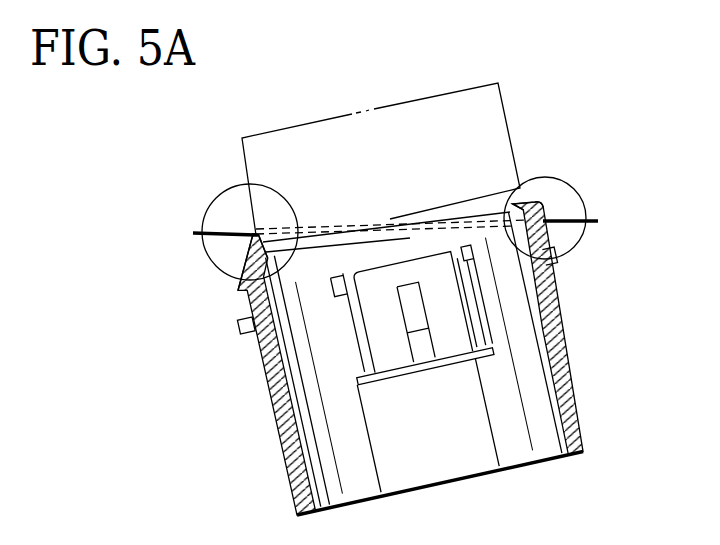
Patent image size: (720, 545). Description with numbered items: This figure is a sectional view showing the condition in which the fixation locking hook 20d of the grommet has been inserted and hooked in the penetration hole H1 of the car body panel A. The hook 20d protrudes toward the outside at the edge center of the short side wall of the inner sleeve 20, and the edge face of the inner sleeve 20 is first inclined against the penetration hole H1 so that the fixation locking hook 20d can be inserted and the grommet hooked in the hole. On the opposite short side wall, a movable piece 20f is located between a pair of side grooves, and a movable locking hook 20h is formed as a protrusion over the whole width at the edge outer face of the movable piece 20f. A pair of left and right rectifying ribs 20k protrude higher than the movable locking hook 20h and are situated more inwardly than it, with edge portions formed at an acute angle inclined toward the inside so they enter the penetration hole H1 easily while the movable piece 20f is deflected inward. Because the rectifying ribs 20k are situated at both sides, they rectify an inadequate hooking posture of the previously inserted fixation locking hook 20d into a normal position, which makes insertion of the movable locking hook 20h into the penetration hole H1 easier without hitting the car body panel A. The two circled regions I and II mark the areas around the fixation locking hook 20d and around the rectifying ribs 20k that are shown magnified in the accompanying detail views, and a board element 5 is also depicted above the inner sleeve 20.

The board 5 is at (510, 113).
The inner sleeve 20 is at (282, 452).
The fixation locking hook 20d is at (540, 207).
The movable piece 20f is at (252, 338).
The movable locking hook 20h is at (246, 250).
The rectifying ribs 20k is at (198, 235).
The penetration hole H1 is at (547, 219).
The car body panel A is at (598, 220).
The magnified region I is at (597, 253).
The magnified region II is at (205, 177).